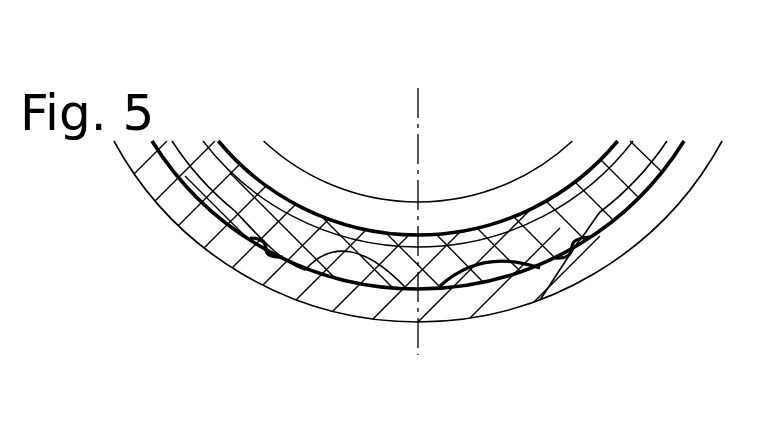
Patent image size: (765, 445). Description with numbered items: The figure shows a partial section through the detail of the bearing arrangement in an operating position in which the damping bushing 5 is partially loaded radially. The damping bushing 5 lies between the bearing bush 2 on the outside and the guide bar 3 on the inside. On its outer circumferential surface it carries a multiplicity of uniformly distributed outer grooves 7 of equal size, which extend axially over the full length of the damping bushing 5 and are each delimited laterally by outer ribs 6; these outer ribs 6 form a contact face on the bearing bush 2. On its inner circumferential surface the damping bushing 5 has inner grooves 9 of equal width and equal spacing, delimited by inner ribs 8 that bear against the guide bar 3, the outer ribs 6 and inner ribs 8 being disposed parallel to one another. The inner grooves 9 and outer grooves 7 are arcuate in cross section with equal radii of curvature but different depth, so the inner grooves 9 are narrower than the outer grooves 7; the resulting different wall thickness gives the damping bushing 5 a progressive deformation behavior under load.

The bearing bush 2 is at (690, 168).
The guide bar 3 is at (320, 198).
The damping bushing 5 is at (553, 268).
The outer ribs 6 is at (260, 280).
The grooves 7 is at (325, 268).
The inner ribs 8 is at (485, 268).
The grooves 9 is at (433, 240).